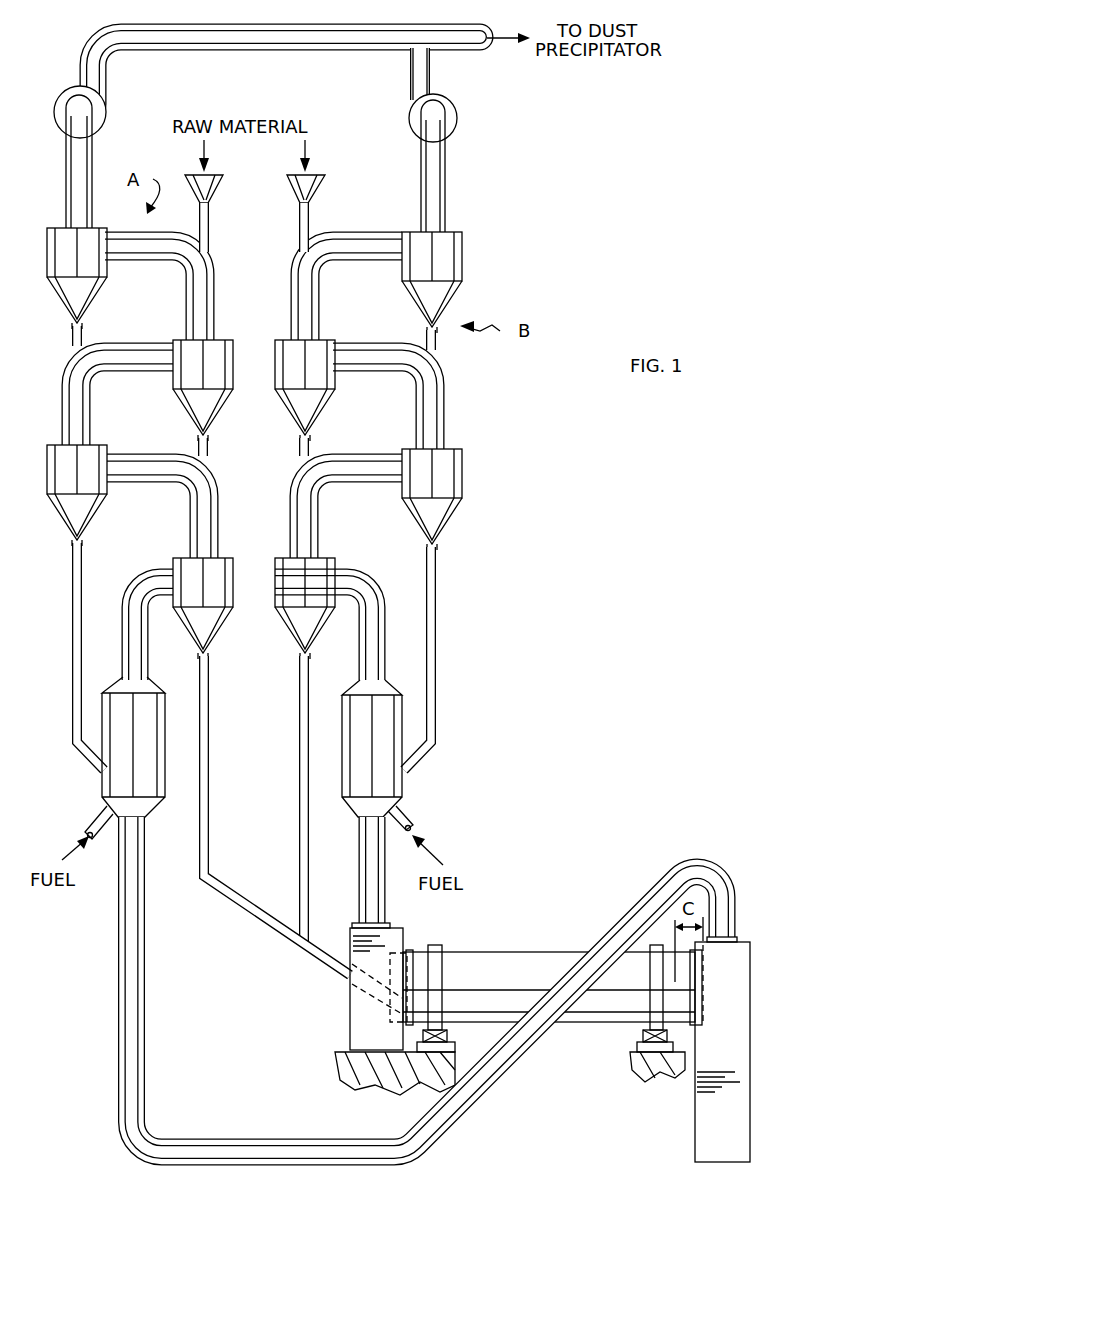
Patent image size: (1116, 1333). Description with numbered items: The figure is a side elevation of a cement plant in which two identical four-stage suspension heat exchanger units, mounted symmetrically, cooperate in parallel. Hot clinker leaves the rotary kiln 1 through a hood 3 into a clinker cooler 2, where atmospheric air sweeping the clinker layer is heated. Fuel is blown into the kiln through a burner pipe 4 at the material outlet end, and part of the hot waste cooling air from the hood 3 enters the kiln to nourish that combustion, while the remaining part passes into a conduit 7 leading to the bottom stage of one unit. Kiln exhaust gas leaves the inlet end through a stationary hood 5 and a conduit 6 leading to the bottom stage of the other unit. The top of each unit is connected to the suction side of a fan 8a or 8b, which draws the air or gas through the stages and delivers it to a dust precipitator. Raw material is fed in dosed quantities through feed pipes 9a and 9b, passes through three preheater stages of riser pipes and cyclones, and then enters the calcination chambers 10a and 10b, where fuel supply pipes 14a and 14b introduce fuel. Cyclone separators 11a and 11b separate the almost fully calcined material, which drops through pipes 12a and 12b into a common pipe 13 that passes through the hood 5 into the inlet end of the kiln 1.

The rotary kiln 1 is at (503, 958).
The clinker cooler 2 is at (836, 1123).
The hood 3 is at (815, 1070).
The burner pipe 4 is at (765, 1000).
The stationary hood 5 is at (358, 1022).
The conduit 6 is at (360, 880).
The conduit 7 is at (522, 1056).
The fan 8a is at (70, 100).
The fan 8b is at (458, 122).
The feed pipe 9a is at (216, 190).
The feed pipe 9b is at (322, 190).
The calcination chamber 10a is at (158, 708).
The calcination chamber 10b is at (348, 708).
The cyclone separator 11a is at (178, 558).
The cyclone separator 11b is at (330, 562).
The pipe 12a is at (210, 712).
The pipe 12b is at (298, 826).
The common pipe 13 is at (272, 940).
The fuel supply pipe 14a is at (102, 816).
The fuel supply pipe 14b is at (412, 816).